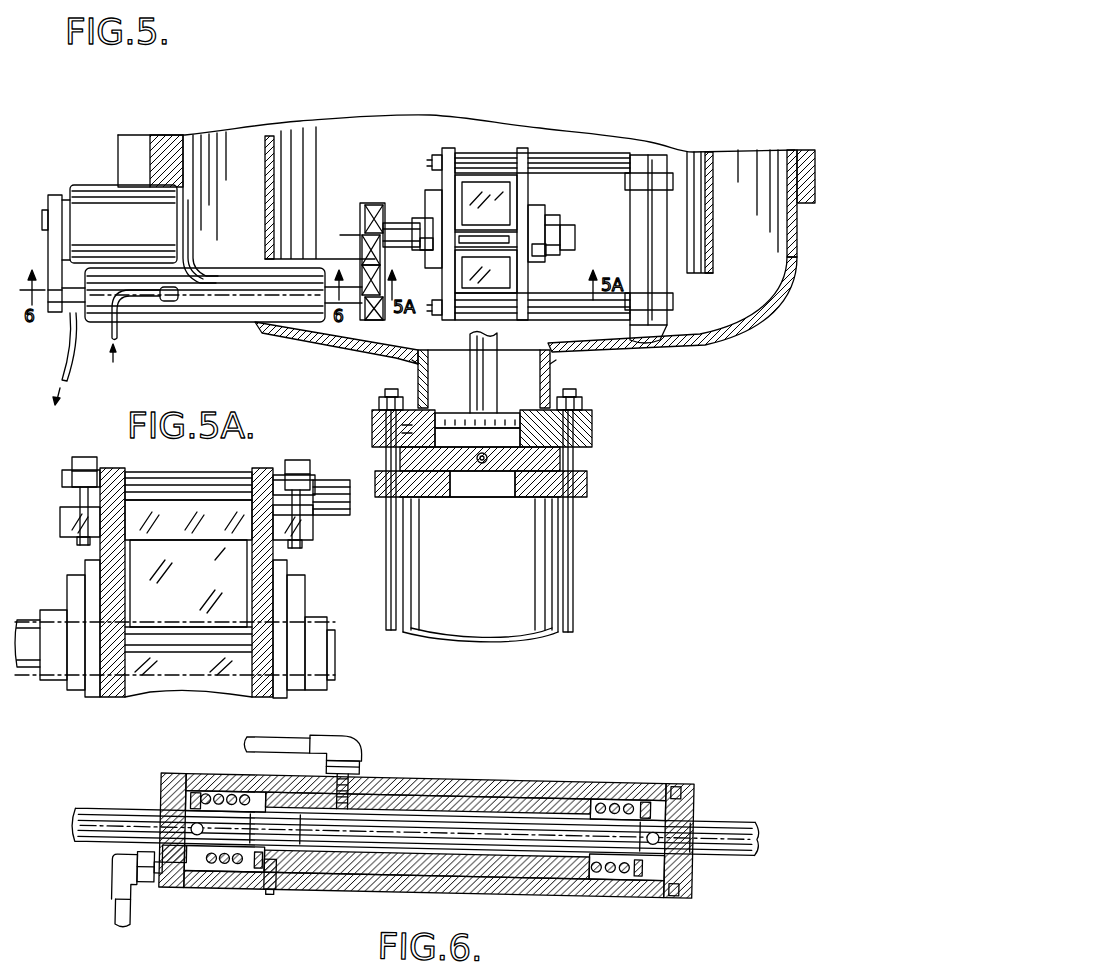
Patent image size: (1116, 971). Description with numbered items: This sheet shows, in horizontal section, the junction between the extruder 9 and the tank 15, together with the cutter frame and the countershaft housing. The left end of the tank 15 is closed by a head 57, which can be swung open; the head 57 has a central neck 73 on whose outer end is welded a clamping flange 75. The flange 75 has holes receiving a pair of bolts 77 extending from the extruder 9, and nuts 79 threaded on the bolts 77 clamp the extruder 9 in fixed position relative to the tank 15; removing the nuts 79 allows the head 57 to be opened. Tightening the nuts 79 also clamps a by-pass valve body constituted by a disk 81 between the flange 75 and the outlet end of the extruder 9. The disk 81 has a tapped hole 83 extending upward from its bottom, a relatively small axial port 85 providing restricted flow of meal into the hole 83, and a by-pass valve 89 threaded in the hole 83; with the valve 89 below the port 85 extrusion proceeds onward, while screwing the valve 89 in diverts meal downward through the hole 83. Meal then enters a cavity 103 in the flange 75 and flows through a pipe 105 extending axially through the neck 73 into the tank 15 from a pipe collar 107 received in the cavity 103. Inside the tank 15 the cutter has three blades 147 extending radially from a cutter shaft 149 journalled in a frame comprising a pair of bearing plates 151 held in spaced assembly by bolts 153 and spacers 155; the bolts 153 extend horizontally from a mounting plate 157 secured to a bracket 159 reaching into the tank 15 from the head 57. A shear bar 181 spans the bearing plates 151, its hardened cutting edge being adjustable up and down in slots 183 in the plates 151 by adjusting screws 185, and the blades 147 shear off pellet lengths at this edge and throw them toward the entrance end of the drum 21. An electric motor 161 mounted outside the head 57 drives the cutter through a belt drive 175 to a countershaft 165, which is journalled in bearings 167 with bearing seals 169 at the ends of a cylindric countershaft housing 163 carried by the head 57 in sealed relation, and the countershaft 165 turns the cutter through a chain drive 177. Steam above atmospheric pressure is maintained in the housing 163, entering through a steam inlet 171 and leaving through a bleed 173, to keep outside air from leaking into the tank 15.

In FIG. 5, the extruder 9 is at (560, 641).
In FIG. 5, the tank 15 is at (182, 134).
In FIG. 5, the drum 21 is at (717, 166).
In FIG. 5, the head 57 is at (744, 323).
In FIG. 5, the neck 73 is at (555, 384).
In FIG. 5, the clamping flange 75 is at (596, 431).
In FIG. 5, the bolts 77 is at (388, 563).
In FIG. 5, the nuts 79 is at (383, 401).
In FIG. 5, the disk 81 is at (560, 461).
In FIG. 5, the tapped hole 83 is at (477, 438).
In FIG. 5, the axial port 85 is at (480, 480).
In FIG. 5, the by-pass valve 89 is at (497, 445).
In FIG. 5, the cavity 103 is at (432, 433).
In FIG. 5, the pipe 105 is at (490, 362).
In FIG. 5, the pipe collar 107 is at (458, 413).
In FIG. 5, the blades 147 is at (500, 220).
In FIG. 5A, the blades 147 is at (200, 595).
In FIG. 5, the cutter shaft 149 is at (394, 219).
In FIG. 5A, the cutter shaft 149 is at (334, 660).
In FIG. 5, the bearing plates 151 is at (450, 148).
In FIG. 5A, the bearing plates 151 is at (117, 468).
In FIG. 5, the bolts 153 is at (436, 157).
In FIG. 5, the spacers 155 is at (500, 153).
In FIG. 5A, the spacers 155 is at (190, 477).
In FIG. 5, the mounting plate 157 is at (645, 155).
In FIG. 5, the bracket 159 is at (656, 282).
In FIG. 5, the electric motor 161 is at (128, 229).
In FIG. 5, the countershaft housing 163 is at (212, 320).
In FIG. 6, the countershaft housing 163 is at (482, 778).
In FIG. 6, the countershaft 165 is at (108, 812).
In FIG. 6, the bearings 167 is at (685, 800).
In FIG. 6, the bearing seals 169 is at (228, 870).
In FIG. 5, the steam inlet 171 is at (170, 302).
In FIG. 6, the steam inlet 171 is at (352, 740).
In FIG. 5, the bleed 173 is at (68, 374).
In FIG. 6, the bleed 173 is at (113, 870).
In FIG. 5, the belt drive 175 is at (60, 203).
In FIG. 5, the chain drive 177 is at (365, 246).
In FIG. 5, the shear bar 181 is at (538, 250).
In FIG. 5A, the shear bar 181 is at (62, 525).
In FIG. 5A, the slots 183 is at (85, 478).
In FIG. 5, the adjusting screws 185 is at (427, 238).
In FIG. 5A, the adjusting screws 185 is at (82, 507).